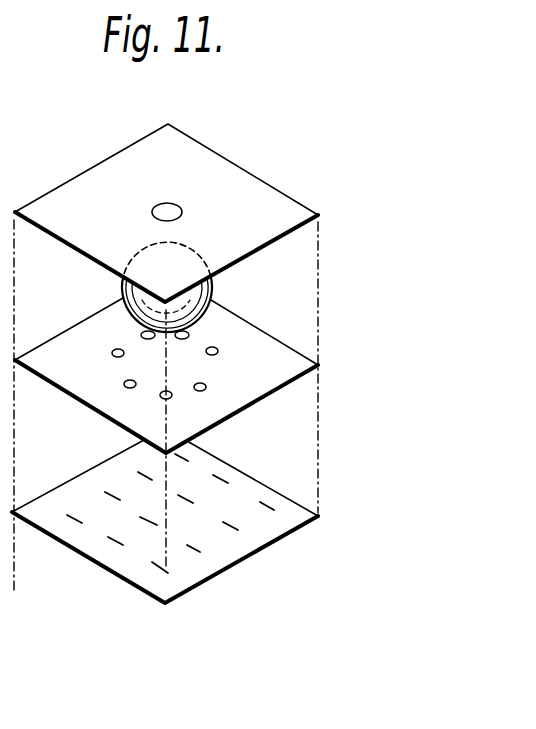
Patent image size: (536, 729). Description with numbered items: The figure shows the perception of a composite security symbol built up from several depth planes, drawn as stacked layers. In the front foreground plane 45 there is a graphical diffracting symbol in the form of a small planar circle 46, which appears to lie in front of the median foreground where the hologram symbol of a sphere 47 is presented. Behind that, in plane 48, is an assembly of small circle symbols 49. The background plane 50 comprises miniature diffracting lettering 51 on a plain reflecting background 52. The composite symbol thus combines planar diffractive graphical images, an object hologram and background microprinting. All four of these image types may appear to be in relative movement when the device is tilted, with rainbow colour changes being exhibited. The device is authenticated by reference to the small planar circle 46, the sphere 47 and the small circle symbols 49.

The front foreground plane 45 is at (284, 241).
The small planar circle 46 is at (168, 201).
The hologram symbol of a sphere 47 is at (212, 292).
The plane 48 is at (235, 415).
The small circle symbols 49 is at (206, 383).
The background plane 50 is at (285, 538).
The miniature diffracting lettering 51 is at (266, 508).
The plain reflecting background 52 is at (90, 525).